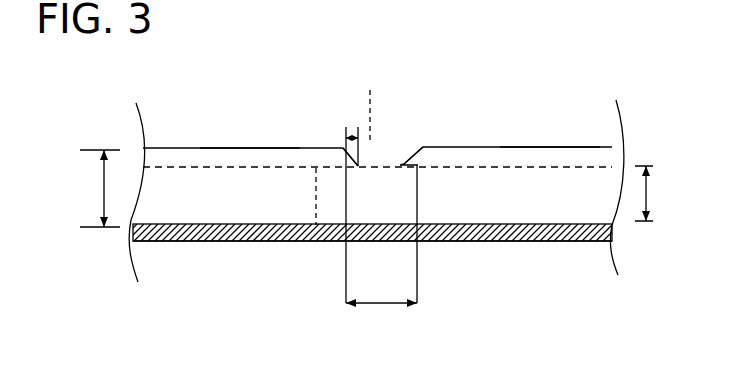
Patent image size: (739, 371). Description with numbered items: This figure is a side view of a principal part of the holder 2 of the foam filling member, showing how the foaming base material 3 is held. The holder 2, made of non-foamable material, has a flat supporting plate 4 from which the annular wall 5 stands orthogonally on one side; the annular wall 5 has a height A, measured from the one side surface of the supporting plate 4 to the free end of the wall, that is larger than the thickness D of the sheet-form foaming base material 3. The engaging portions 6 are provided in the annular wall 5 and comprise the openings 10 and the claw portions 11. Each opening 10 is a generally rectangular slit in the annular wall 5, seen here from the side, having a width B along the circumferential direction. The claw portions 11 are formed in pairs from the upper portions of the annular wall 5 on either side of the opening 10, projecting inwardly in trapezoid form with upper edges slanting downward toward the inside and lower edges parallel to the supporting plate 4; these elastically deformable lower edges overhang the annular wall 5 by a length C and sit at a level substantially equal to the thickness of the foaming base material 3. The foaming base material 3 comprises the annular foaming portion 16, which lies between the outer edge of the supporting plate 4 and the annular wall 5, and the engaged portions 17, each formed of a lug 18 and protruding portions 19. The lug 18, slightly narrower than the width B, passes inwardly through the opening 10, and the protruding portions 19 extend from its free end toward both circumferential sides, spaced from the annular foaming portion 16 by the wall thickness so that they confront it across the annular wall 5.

The holder 2 is at (547, 247).
The foaming base material 3 is at (207, 167).
The supporting plate 4 is at (243, 244).
The annular wall 5 is at (255, 147).
The engaging portions 6 is at (377, 126).
The openings 10 is at (346, 204).
The claw portions 11 is at (344, 143).
The annular foaming portion 16 is at (520, 162).
The engaged portions 17 is at (310, 200).
The lug 18 is at (390, 205).
The protruding portions 19 is at (447, 192).
The height of annular wall A is at (104, 193).
The width of opening B is at (383, 310).
The overhang length of claw portion C is at (352, 133).
The thickness of foaming base material D is at (653, 193).